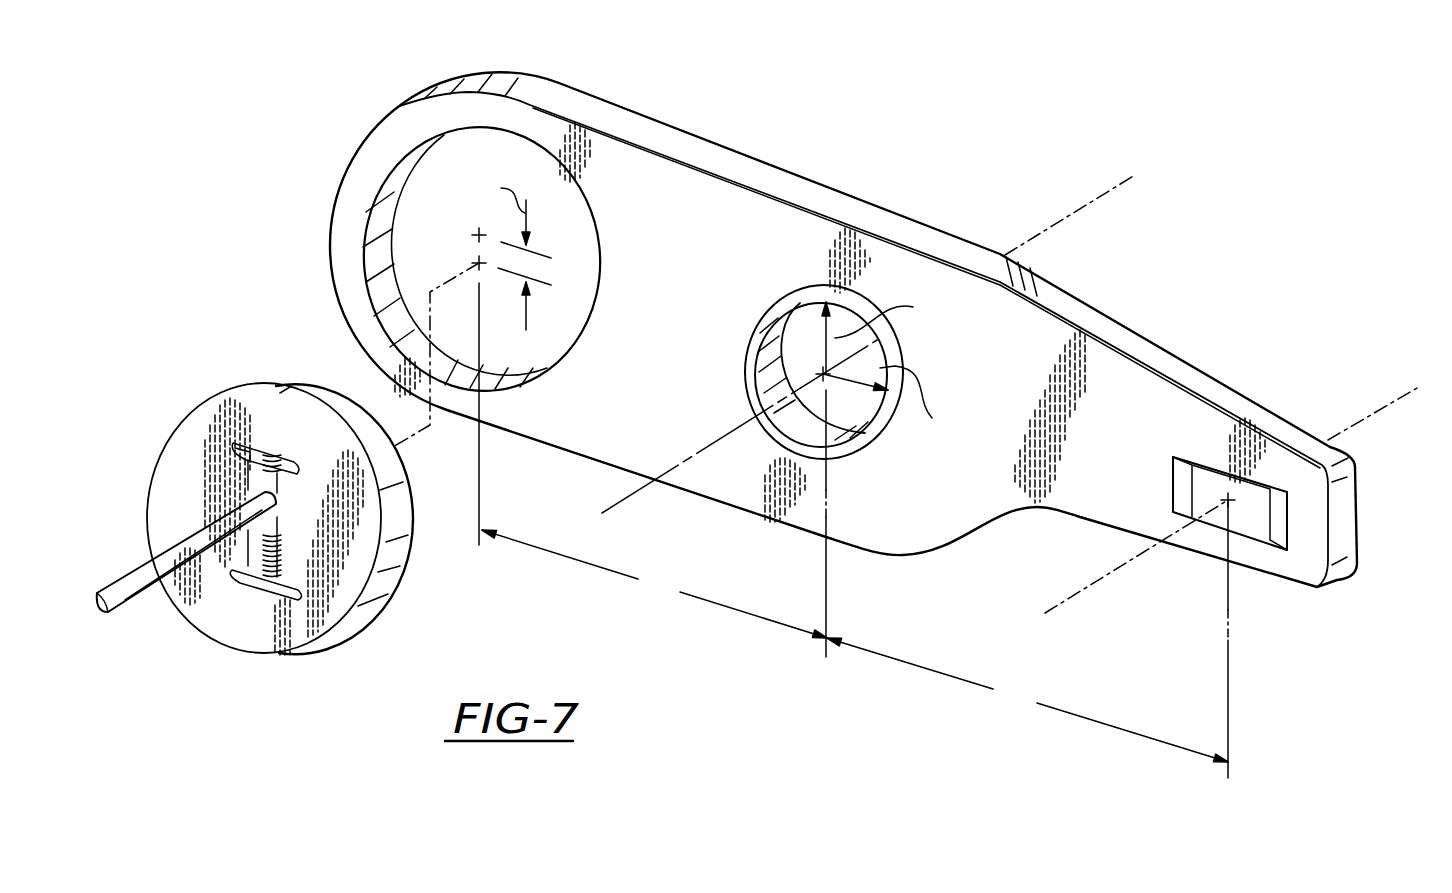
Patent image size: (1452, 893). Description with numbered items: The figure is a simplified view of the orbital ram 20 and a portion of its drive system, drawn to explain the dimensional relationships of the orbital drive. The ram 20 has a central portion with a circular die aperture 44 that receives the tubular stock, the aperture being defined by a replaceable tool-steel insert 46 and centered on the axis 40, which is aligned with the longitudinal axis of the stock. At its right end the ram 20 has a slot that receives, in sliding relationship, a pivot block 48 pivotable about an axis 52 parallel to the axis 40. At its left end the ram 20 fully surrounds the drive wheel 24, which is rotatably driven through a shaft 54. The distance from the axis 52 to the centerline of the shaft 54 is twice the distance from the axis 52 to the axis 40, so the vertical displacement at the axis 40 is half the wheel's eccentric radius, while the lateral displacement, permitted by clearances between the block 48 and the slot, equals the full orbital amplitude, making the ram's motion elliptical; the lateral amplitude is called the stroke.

The orbital ram 20 is at (780, 178).
The drive wheel 24 is at (207, 414).
The central axis 40 is at (667, 472).
The circular die aperture 44 is at (768, 378).
The replaceable tool-steel insert 46 is at (768, 308).
The pivot block 48 is at (1213, 485).
The pivot axis 52 is at (1383, 410).
The shaft 54 is at (137, 572).